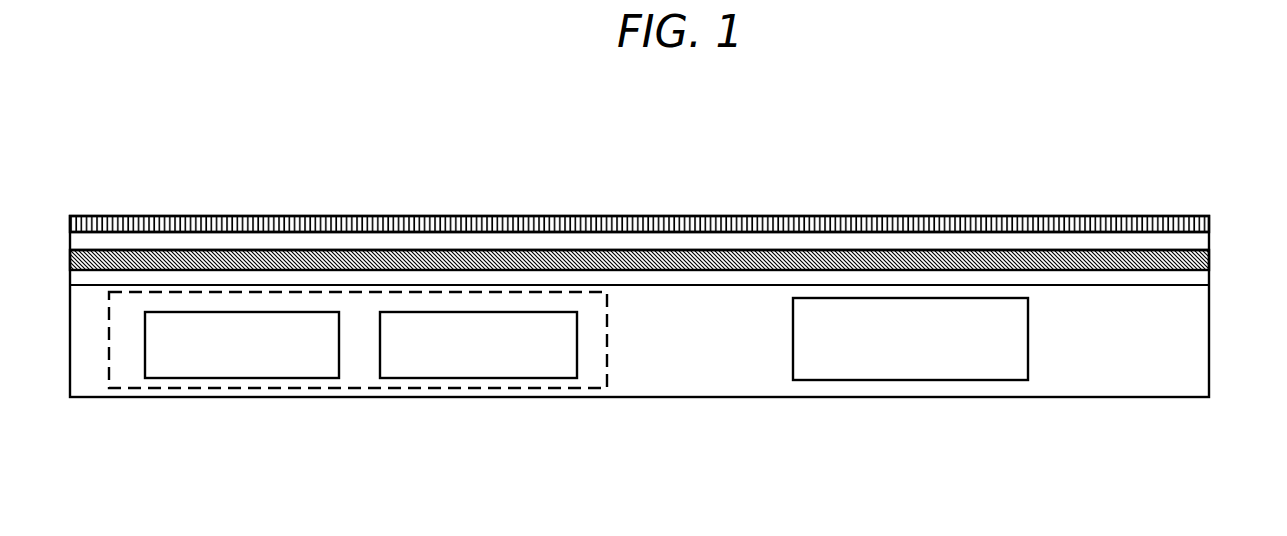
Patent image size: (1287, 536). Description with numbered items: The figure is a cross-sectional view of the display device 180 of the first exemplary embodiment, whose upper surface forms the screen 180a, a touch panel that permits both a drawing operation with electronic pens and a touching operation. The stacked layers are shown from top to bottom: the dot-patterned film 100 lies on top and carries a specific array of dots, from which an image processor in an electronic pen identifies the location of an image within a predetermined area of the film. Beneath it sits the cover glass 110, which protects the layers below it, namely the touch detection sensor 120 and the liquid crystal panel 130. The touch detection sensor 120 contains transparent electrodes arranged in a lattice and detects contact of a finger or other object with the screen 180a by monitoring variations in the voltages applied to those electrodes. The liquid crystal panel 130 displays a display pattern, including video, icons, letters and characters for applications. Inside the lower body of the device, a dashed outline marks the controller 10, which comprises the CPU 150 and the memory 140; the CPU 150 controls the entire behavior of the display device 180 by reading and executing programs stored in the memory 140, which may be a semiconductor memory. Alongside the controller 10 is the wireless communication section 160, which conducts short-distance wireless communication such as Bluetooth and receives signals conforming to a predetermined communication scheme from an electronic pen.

The dot-patterned film 100 is at (1135, 226).
The cover glass 110 is at (1011, 243).
The touch detection sensor 120 is at (1210, 251).
The liquid crystal panel 130 is at (1210, 272).
The controller 10 is at (608, 346).
The CPU 150 is at (237, 378).
The memory 140 is at (481, 378).
The wireless communication section 160 is at (914, 380).
The display device 180 is at (340, 158).
The screen 180a is at (591, 210).